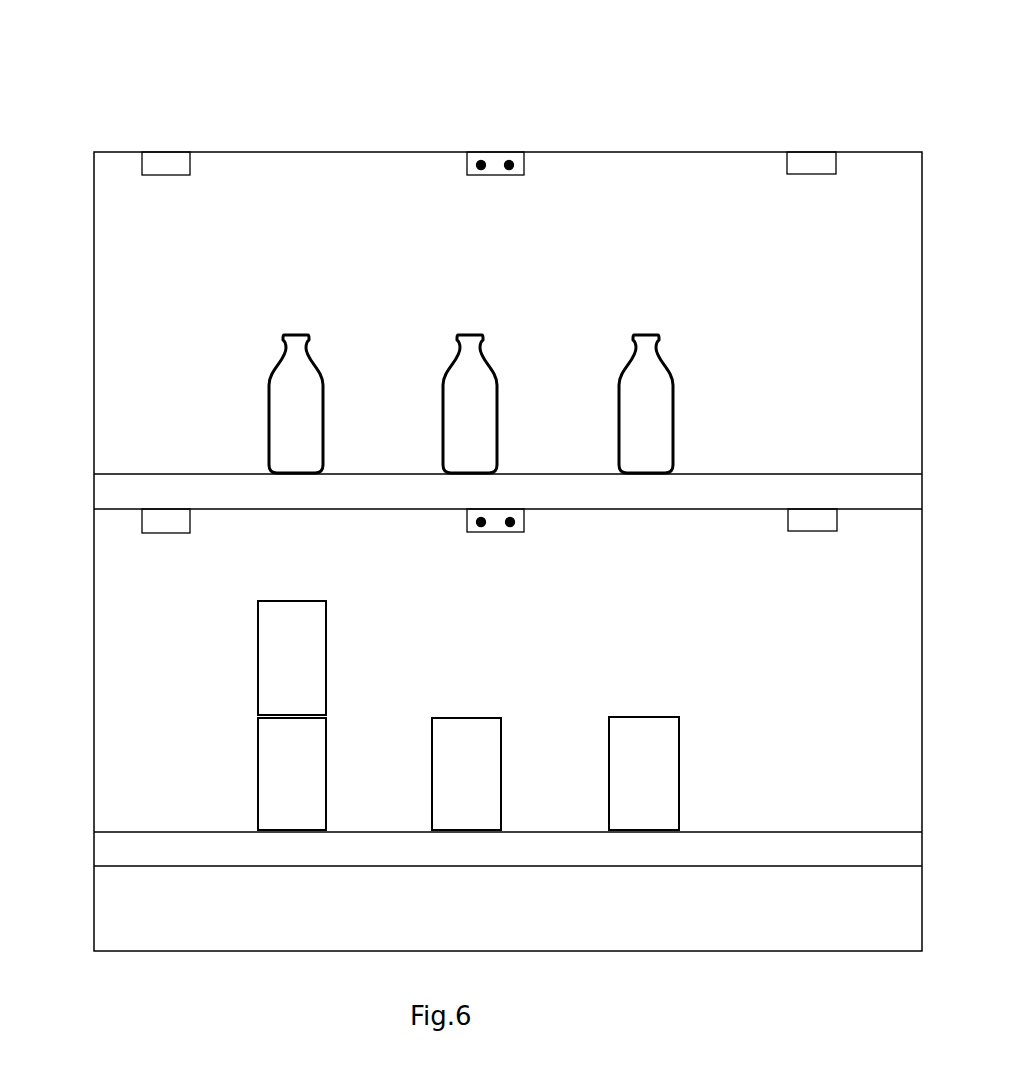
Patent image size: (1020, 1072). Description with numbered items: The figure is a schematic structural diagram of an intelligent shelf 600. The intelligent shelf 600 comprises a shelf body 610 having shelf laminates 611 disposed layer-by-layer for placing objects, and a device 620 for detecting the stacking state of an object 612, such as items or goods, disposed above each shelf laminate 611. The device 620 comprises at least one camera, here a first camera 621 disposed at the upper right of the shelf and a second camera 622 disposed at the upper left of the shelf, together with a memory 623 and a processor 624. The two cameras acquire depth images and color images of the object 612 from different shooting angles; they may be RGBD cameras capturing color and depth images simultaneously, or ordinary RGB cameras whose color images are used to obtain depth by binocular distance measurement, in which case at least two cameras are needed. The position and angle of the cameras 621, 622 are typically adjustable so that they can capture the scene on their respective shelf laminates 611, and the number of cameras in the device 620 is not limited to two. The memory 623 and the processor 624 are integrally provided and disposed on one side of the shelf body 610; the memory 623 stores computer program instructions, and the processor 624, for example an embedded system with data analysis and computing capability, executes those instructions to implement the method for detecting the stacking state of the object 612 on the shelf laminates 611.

The intelligent shelf 600 is at (69, 139).
The shelf body 610 is at (93, 328).
The shelf laminate 611 is at (765, 474).
The object 612 is at (679, 376).
The device for detecting an object stacking state 620 is at (707, 90).
The first camera 621 is at (812, 152).
The second camera 622 is at (180, 152).
The memory 623 is at (477, 156).
The processor 624 is at (517, 156).